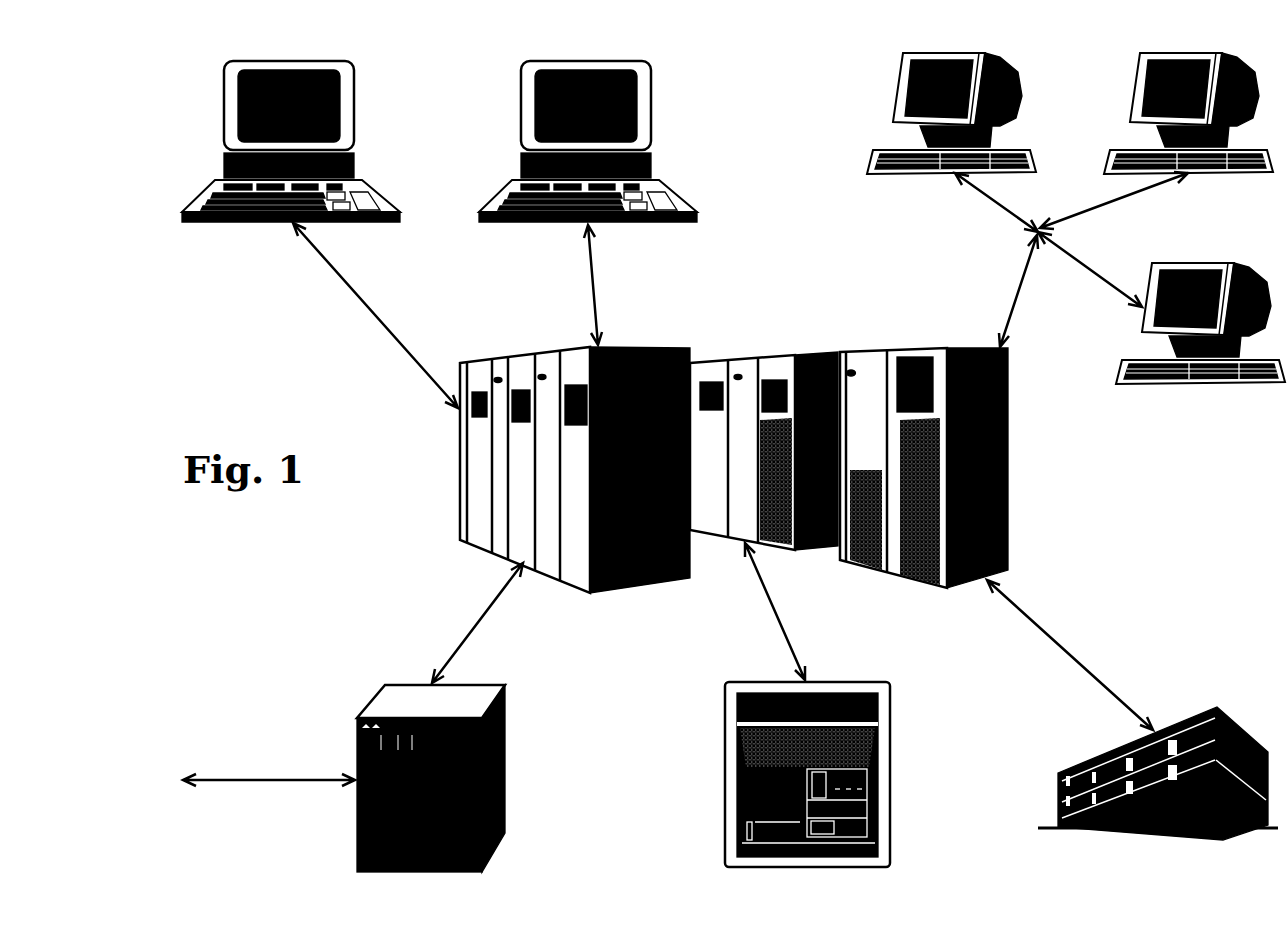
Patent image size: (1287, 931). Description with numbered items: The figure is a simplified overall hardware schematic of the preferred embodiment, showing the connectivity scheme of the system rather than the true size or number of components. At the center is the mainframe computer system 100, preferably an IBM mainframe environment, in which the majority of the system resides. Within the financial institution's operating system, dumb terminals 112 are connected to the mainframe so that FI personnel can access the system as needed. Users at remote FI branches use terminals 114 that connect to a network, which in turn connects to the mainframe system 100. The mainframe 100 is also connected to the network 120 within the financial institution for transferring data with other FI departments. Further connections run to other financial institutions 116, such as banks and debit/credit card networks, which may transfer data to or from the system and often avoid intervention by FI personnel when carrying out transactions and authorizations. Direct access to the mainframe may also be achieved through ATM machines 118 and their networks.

The mainframe computer system 100 is at (759, 470).
The dumb terminals 112 is at (439, 151).
The terminals 114 is at (1076, 231).
The other financial institutions 116 is at (1158, 782).
The ATM machines 118 is at (827, 774).
The network 120 is at (449, 778).